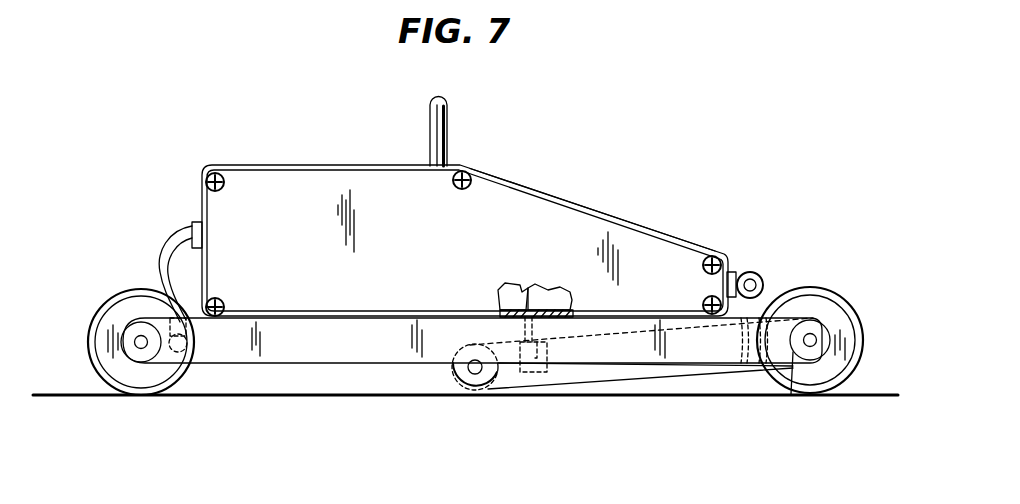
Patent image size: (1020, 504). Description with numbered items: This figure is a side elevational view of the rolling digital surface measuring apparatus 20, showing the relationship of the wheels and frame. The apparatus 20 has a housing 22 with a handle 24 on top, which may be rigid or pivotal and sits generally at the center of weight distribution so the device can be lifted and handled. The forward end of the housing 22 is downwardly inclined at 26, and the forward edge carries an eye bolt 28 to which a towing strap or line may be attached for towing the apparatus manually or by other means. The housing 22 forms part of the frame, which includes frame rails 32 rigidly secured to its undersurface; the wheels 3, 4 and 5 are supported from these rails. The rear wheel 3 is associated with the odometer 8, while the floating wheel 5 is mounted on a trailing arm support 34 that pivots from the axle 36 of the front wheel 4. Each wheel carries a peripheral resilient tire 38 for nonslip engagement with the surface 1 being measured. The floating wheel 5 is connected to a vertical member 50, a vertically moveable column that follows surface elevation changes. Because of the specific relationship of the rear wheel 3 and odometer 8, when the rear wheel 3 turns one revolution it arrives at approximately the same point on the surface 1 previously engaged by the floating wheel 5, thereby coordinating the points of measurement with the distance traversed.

The surface 1 is at (62, 398).
The rear wheel 3 is at (150, 374).
The front wheel 4 is at (794, 312).
The floating wheel 5 is at (460, 380).
The odometer 8 is at (196, 350).
The rolling digital surface measuring apparatus 20 is at (306, 148).
The housing 22 is at (485, 196).
The handle 24 is at (441, 118).
The downwardly inclined forward end 26 is at (607, 214).
The eye bolt 28 is at (752, 272).
The frame rails 32 is at (376, 365).
The trailing arm support 34 is at (566, 374).
The axle 36 is at (802, 356).
The resilient tire 38 is at (124, 290).
The vertical member 50 is at (522, 290).